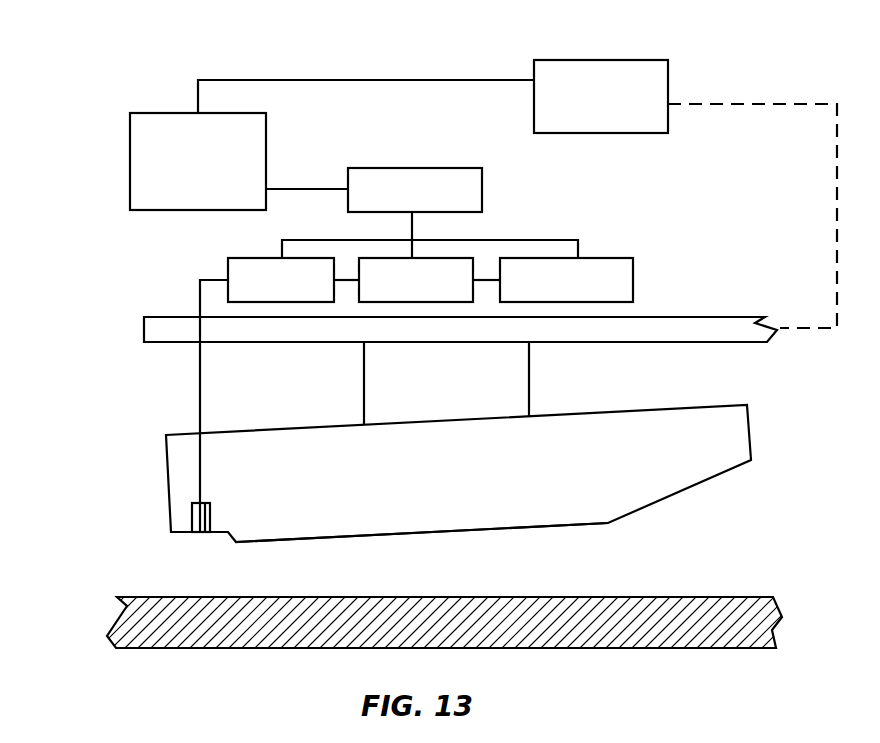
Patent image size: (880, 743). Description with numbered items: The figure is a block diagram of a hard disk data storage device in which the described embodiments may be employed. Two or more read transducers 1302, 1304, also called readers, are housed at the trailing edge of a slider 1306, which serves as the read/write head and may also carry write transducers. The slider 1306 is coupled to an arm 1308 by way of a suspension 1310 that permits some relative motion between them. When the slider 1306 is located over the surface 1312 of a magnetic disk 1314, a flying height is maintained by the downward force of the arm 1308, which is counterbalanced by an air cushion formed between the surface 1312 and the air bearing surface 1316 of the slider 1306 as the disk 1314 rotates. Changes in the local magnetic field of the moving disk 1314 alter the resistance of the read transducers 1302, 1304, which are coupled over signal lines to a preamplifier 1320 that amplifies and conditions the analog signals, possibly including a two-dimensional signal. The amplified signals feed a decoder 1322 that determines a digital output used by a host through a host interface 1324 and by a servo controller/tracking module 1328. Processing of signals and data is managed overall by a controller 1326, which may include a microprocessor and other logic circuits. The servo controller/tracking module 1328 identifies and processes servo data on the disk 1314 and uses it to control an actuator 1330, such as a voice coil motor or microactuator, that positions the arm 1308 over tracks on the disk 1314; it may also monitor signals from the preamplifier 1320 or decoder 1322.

The read transducer 1302 is at (192, 532).
The read transducer 1304 is at (207, 532).
The slider 1306 is at (650, 418).
The arm 1308 is at (700, 322).
The suspension 1310 is at (529, 378).
The surface 1312 is at (655, 597).
The magnetic disk 1314 is at (627, 640).
The air bearing surface 1316 is at (482, 527).
The preamplifier 1320 is at (245, 258).
The decoder 1322 is at (388, 258).
The host interface 1324 is at (598, 258).
The controller 1326 is at (388, 168).
The servo controller/tracking module 1328 is at (151, 113).
The actuator 1330 is at (578, 60).